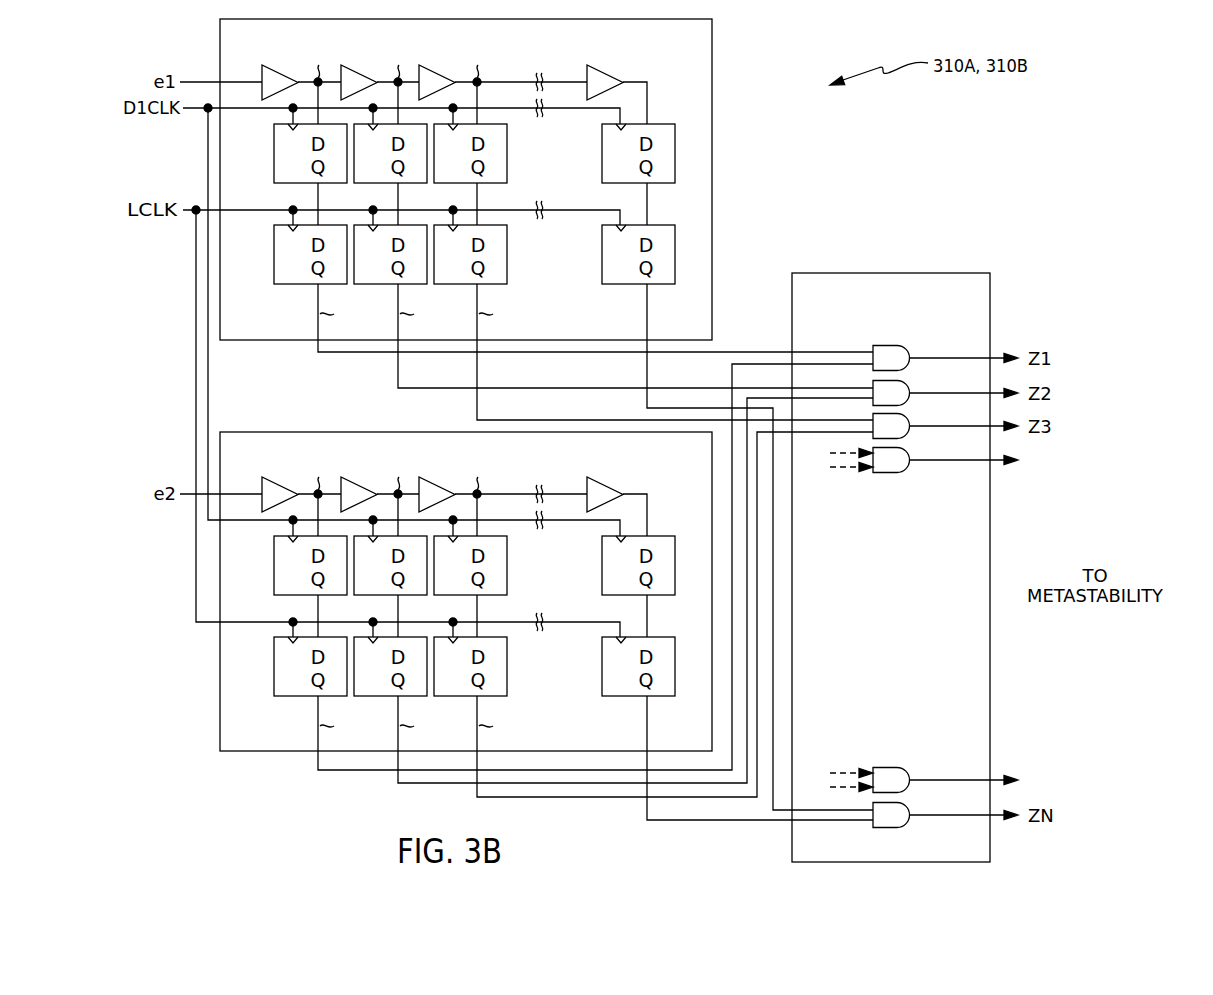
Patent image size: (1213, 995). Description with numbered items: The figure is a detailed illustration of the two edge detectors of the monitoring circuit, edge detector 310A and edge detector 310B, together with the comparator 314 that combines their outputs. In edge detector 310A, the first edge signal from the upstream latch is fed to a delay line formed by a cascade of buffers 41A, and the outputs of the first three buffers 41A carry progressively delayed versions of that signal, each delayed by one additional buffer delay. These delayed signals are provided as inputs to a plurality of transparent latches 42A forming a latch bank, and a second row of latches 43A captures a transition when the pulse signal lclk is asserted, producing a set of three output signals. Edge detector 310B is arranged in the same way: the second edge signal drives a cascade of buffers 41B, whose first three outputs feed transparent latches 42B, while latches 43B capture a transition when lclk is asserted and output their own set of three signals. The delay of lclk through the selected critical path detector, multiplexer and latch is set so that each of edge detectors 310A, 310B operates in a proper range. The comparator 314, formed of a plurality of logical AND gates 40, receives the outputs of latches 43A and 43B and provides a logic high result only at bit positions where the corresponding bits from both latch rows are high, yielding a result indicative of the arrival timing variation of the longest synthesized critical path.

The buffers 41A is at (269, 64).
The transparent latches 42A is at (274, 165).
The latches 43A is at (274, 266).
The edge detector 310A is at (695, 77).
The buffers 41B is at (269, 476).
The transparent latches 42B is at (274, 577).
The latches 43B is at (274, 678).
The edge detector 310B is at (695, 489).
The comparator 314 is at (953, 273).
The logical AND gates 40 is at (897, 345).